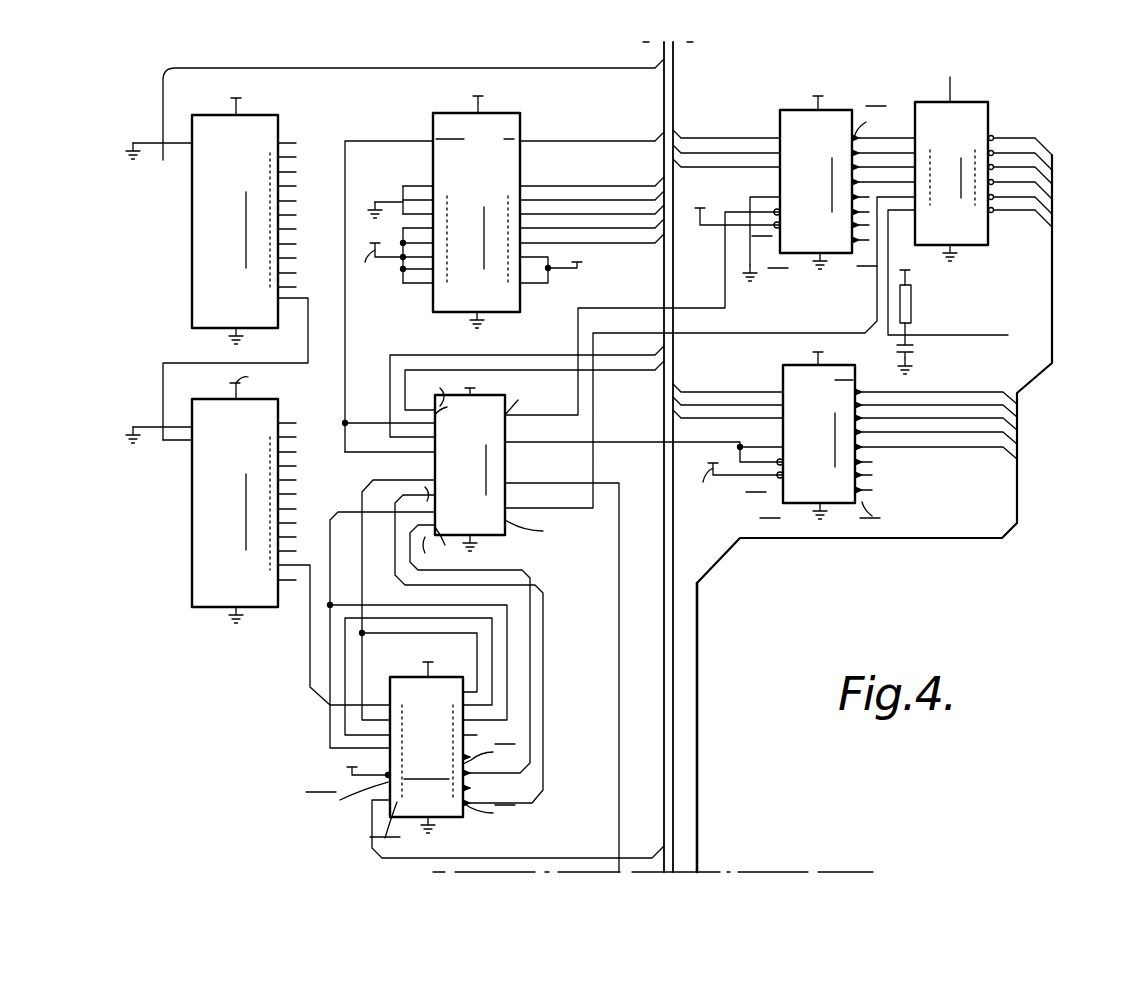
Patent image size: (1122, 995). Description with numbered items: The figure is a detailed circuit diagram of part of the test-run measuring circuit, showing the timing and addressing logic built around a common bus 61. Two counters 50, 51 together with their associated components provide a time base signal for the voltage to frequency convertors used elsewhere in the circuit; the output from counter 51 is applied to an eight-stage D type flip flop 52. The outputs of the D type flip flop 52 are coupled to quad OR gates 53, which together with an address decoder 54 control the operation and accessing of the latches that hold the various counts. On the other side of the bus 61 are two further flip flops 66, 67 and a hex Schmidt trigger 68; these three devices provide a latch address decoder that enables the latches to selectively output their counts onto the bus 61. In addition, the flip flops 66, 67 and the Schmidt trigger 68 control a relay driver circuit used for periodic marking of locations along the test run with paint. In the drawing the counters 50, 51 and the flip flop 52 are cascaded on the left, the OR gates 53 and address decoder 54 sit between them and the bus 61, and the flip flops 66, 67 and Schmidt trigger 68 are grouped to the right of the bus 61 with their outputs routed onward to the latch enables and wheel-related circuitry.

The counter 50 is at (192, 289).
The counter 51 is at (192, 564).
The D type flip flop 52 is at (400, 683).
The quad OR gates 53 is at (505, 535).
The address decoder 54 is at (520, 125).
The bus 61 is at (670, 703).
The flip flop 66 is at (780, 112).
The flip flop 67 is at (783, 367).
The HEX Schmidt trigger 68 is at (988, 106).